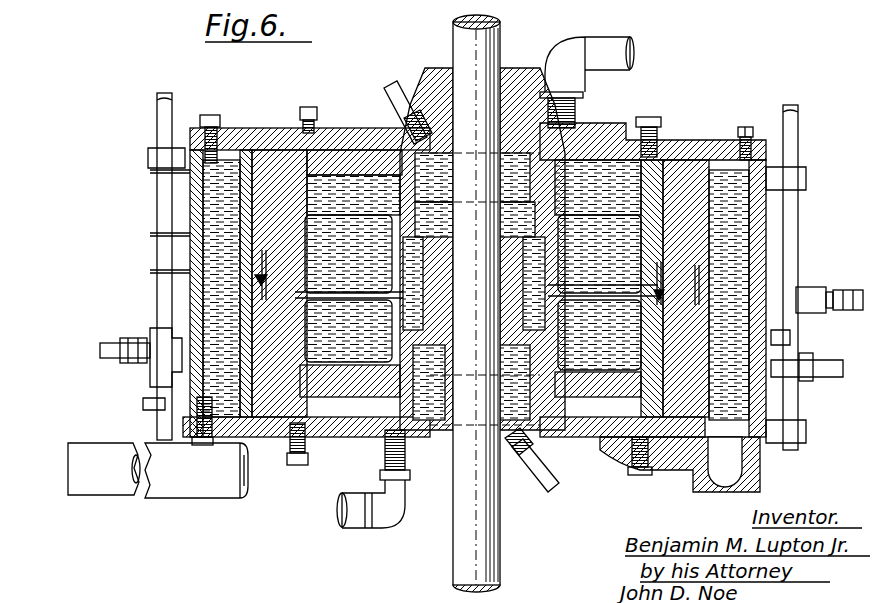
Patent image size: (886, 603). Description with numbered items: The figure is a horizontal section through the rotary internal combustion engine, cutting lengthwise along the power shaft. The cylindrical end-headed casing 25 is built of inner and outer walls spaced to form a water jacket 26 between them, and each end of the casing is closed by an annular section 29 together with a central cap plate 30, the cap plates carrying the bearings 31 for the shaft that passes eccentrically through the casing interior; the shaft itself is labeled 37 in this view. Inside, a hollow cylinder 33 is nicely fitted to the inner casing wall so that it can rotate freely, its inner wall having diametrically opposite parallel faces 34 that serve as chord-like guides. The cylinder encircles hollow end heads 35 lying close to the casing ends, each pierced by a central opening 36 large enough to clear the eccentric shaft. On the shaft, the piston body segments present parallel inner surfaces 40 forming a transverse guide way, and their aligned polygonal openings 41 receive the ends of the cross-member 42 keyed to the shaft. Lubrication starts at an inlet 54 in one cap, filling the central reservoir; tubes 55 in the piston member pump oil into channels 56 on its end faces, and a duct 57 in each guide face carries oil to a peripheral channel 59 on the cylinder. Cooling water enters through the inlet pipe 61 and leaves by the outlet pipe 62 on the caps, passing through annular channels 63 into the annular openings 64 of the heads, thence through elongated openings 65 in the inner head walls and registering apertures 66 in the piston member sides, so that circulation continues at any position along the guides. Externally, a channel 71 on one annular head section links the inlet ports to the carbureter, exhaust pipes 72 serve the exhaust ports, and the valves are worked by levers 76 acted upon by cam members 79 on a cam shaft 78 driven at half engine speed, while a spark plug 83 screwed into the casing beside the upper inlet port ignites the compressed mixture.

The casing 25 is at (728, 148).
The jacket 26 is at (735, 207).
The annular sections 29 is at (246, 128).
The central cap plates 30 is at (676, 127).
The bearings 31 is at (512, 76).
The hollow cylinder 33 is at (248, 318).
The parallel faces 34 is at (200, 192).
The end heads 35 is at (320, 150).
The central openings 36 is at (440, 193).
The shaft 37 is at (433, 565).
The parallel inner surfaces 40 is at (427, 294).
The transverse openings 41 is at (445, 240).
The cross-member 42 is at (435, 353).
The inlet 54 is at (400, 84).
The tubes 55 is at (597, 296).
The channels 56 is at (663, 272).
The duct 57 is at (686, 290).
The channel 59 is at (250, 272).
The inlet pipe 61 is at (348, 527).
The outlet pipe 62 is at (570, 103).
The annular channels 63 is at (362, 432).
The annular openings 64 is at (606, 127).
The elongated openings 65 is at (600, 368).
The apertures 66 is at (345, 368).
The channel 71 is at (712, 462).
The exhaust pipes 72 is at (85, 488).
The levers 76 is at (100, 352).
The cam shaft 78 is at (157, 128).
The cam members 79 is at (163, 370).
The spark plug 83 is at (840, 294).